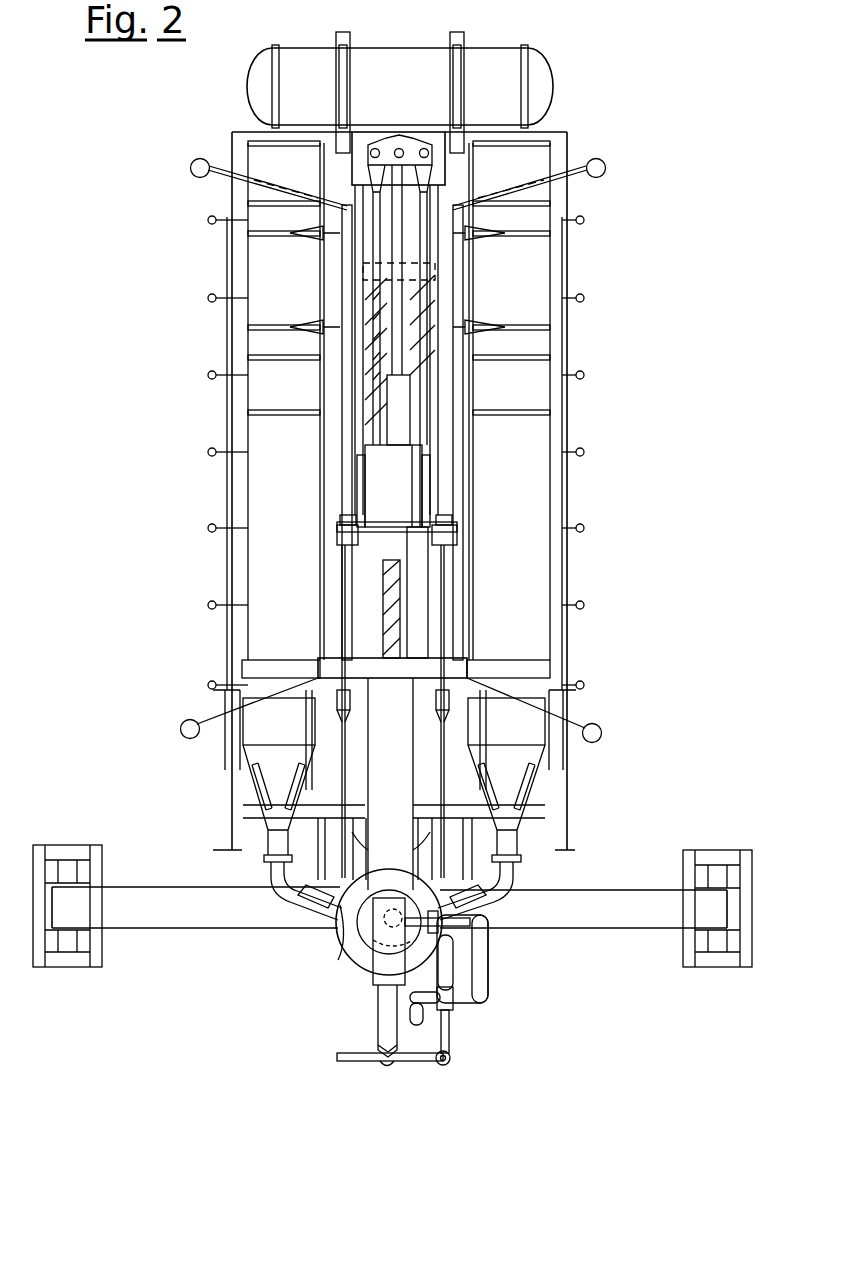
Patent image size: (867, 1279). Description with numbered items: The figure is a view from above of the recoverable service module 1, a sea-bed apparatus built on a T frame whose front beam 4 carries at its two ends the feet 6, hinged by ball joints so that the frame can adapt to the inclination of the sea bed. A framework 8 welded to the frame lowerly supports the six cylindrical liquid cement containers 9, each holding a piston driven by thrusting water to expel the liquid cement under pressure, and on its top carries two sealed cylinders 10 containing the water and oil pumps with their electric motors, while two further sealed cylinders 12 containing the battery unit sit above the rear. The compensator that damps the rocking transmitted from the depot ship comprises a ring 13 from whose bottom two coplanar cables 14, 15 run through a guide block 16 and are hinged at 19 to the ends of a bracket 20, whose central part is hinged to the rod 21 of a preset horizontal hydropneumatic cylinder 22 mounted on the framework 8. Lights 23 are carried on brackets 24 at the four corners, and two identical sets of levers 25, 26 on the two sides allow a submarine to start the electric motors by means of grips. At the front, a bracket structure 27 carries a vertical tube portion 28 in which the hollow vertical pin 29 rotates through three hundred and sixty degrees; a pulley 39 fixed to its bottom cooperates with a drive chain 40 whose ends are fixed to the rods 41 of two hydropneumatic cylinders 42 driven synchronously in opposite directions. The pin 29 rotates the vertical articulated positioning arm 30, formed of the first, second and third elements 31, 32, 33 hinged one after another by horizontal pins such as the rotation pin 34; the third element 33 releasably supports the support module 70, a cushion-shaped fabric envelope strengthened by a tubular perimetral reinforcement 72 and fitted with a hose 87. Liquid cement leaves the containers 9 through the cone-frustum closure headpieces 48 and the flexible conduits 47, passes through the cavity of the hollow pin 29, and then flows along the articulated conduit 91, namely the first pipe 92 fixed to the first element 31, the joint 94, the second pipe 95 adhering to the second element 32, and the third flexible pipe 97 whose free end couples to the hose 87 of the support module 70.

The recoverable service module 1 is at (599, 428).
The front beam 4 is at (633, 886).
The feet 6 is at (65, 852).
The framework 8 is at (230, 268).
The cylindrical liquid cement containers 9 is at (540, 500).
The sealed cylinders 10 is at (258, 338).
The sealed cylinders 12 is at (388, 68).
The ring 13 is at (410, 520).
The cable 14 is at (356, 378).
The cable 15 is at (430, 386).
The guide block 16 is at (398, 492).
The hinge point 19 is at (375, 148).
The connecting plate 20 is at (400, 142).
The rod 21 is at (366, 272).
The horizontal hydropneumatic cylinder 22 is at (382, 416).
The position lights and illumination lights 23 is at (190, 168).
The brackets 24 is at (203, 159).
The set of levers 25 is at (584, 220).
The set of levers 26 is at (208, 220).
The bracket structure 27 is at (338, 928).
The vertical tube portion 28 is at (348, 958).
The hollow vertical pin 29 is at (360, 938).
The vertical articulated positioning arm 30 is at (340, 1025).
The first element 31 is at (375, 987).
The second element 32 is at (378, 1052).
The third element 33 is at (386, 1071).
The horizontal rotation pin 34 is at (385, 1023).
The pulley 39 is at (380, 970).
The drive chain 40 is at (420, 838).
The rods 41 is at (343, 603).
The hydropneumatic cylinders 42 is at (352, 456).
The flexible conduits 47 is at (275, 876).
The closure headpieces 48 is at (270, 776).
The support module 70 is at (368, 1079).
The tubular perimetral reinforcement 72 is at (418, 1028).
The hose 87 is at (449, 1015).
The articulated conduit 91 is at (506, 986).
The first pipe 92 is at (483, 940).
The joint 94 is at (448, 1000).
The second pipe 95 is at (430, 1005).
The third flexible pipe 97 is at (448, 965).